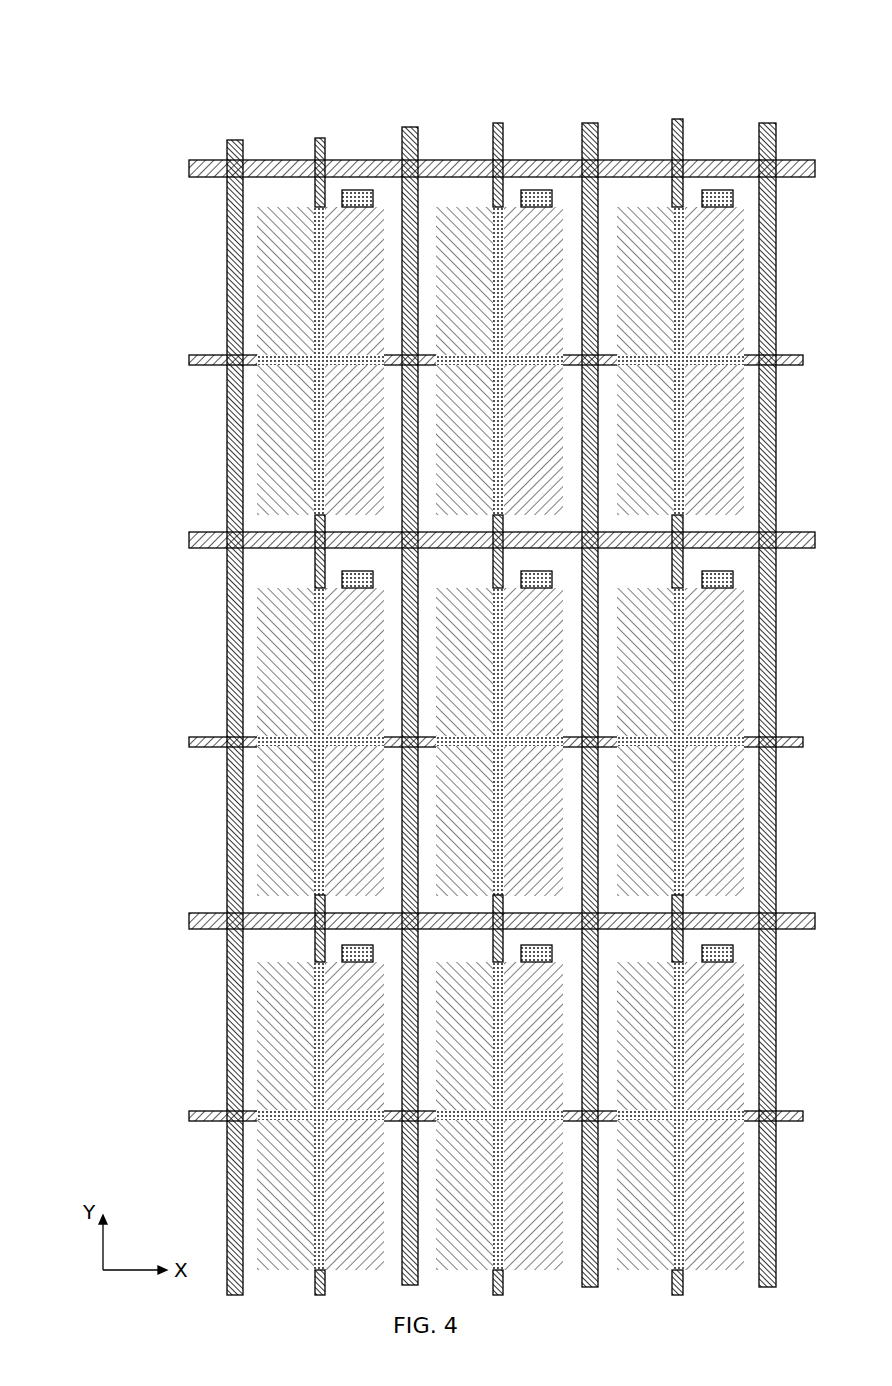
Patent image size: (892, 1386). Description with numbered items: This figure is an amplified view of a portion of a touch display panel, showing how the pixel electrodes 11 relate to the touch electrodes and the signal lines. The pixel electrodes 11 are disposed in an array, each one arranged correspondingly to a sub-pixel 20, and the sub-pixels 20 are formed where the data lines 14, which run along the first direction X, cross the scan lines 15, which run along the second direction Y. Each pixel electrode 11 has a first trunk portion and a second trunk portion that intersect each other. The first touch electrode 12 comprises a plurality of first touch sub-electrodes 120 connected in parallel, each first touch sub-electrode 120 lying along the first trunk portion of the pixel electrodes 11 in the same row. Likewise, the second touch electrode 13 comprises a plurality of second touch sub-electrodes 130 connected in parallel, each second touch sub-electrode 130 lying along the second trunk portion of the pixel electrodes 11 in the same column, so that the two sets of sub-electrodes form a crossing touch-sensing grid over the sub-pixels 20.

The pixel electrode 11 is at (277, 275).
The first touch electrode 12 is at (428, 738).
The first touch sub-electrode 120 is at (193, 366).
The second touch electrode 13 is at (499, 656).
The second touch sub-electrode 130 is at (633, 63).
The data line 14 is at (232, 200).
The scan line 15 is at (197, 167).
The sub-pixel 20 is at (278, 187).